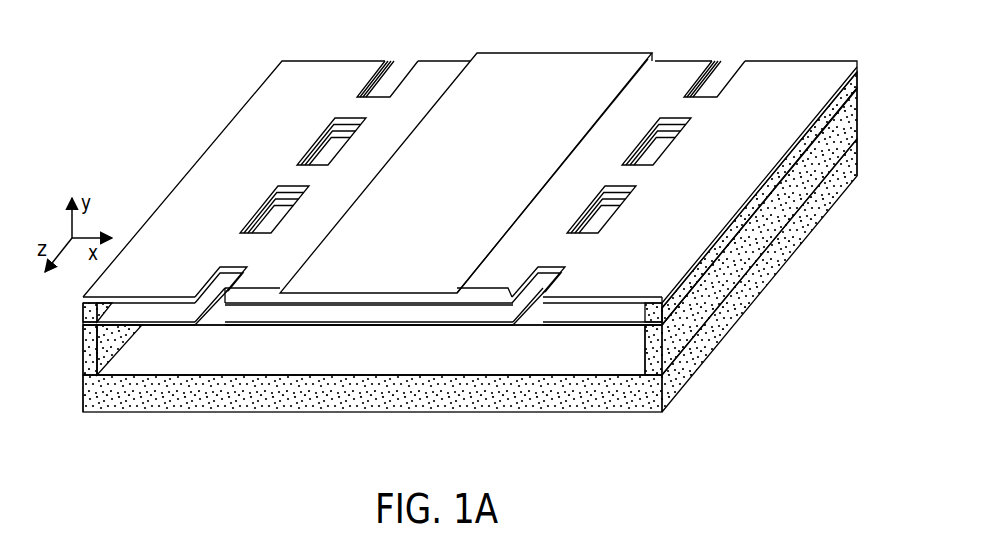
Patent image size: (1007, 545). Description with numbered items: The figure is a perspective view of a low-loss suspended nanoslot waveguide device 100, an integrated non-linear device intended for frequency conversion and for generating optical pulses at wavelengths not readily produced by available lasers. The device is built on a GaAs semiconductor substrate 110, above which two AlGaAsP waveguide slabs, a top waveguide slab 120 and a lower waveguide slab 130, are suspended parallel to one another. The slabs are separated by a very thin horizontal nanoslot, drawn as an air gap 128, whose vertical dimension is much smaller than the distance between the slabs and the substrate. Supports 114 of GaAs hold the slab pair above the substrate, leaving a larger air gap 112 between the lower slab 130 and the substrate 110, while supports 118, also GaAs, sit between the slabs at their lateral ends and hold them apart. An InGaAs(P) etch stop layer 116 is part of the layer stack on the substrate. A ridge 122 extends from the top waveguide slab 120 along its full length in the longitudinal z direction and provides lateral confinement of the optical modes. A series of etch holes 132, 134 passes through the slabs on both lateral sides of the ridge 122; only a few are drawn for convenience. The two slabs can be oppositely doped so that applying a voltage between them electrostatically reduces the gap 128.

The device 100 is at (164, 171).
The semiconductor substrate 110 is at (141, 406).
The air gap 112 is at (410, 358).
The supports 114 is at (82, 353).
The etch stop layer 116 is at (533, 377).
The supports 118 is at (82, 308).
The top waveguide slab 120 is at (498, 284).
The ridge 122 is at (582, 63).
The air gap 128 is at (264, 311).
The lower waveguide slab 130 is at (617, 325).
The etch holes 132 is at (600, 223).
The etch holes 134 is at (257, 223).